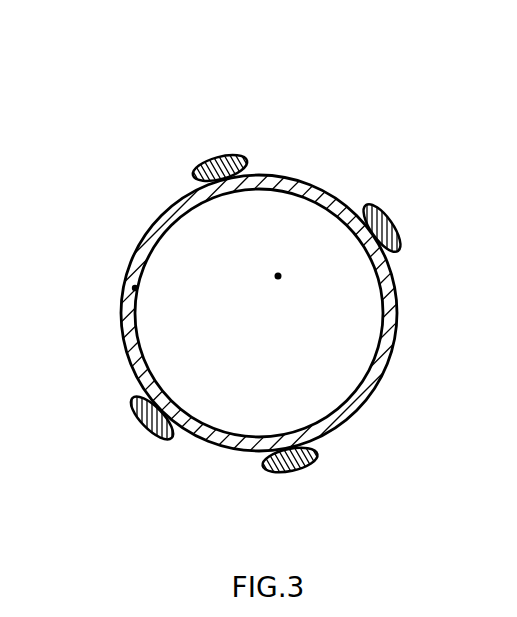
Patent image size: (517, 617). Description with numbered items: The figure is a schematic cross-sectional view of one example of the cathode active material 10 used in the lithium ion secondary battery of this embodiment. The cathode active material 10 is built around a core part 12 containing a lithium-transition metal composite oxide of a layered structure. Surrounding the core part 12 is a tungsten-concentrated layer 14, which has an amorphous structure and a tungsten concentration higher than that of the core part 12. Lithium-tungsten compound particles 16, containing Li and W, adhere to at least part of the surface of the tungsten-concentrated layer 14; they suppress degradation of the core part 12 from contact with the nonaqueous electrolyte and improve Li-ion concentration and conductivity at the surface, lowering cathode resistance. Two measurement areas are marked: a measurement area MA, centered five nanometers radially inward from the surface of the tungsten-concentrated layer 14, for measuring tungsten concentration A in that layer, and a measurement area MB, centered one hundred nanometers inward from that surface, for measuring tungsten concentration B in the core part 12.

The cathode active material 10 is at (251, 259).
The core part 12 is at (317, 392).
The tungsten-concentrated layer 14 is at (288, 180).
The lithium-tungsten compound particle 16 is at (392, 222).
The measurement area MA is at (135, 288).
The measurement area MB is at (278, 276).